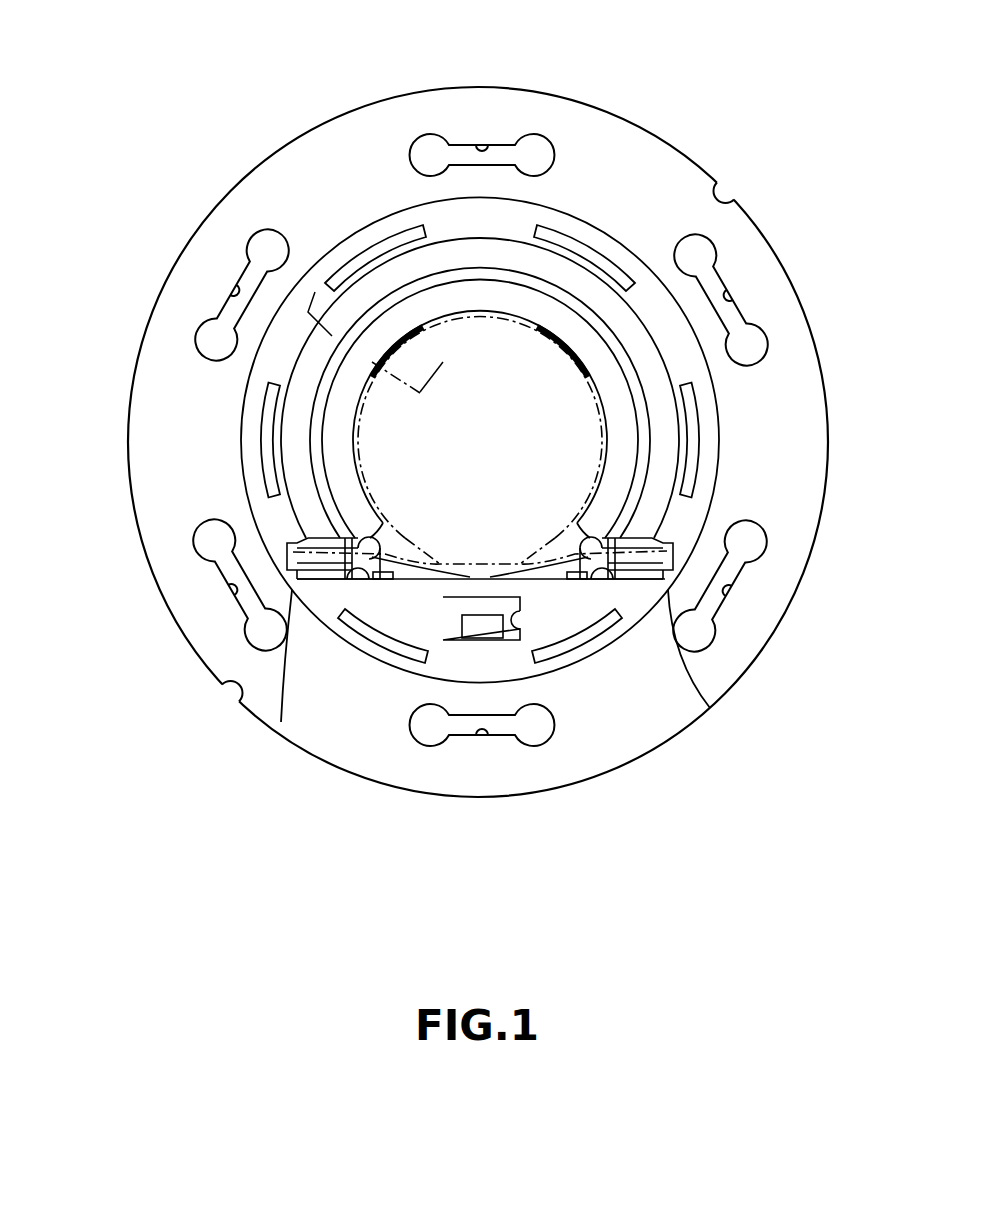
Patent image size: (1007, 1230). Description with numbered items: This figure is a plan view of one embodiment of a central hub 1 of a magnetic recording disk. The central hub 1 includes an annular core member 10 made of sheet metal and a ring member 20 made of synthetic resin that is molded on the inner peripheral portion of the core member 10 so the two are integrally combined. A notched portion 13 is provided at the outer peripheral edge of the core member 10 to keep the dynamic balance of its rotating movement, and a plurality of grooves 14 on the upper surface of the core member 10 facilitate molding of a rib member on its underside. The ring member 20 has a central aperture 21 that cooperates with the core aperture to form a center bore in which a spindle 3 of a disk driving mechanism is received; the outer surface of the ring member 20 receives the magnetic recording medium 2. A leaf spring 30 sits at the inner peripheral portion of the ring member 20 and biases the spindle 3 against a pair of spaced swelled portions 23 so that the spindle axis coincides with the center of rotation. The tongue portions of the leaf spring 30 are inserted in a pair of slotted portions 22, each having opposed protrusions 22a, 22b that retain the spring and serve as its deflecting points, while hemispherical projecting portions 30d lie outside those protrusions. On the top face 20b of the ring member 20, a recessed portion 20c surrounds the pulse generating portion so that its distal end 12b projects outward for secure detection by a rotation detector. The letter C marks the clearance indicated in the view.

The core member 10 is at (822, 336).
The notched portion 13 is at (732, 194).
The grooves 14 is at (492, 149).
The ring member 20 is at (283, 420).
The top face 20b is at (403, 610).
The recessed portion 20c is at (637, 760).
The central aperture 21 is at (353, 453).
The slotted portions 22 is at (370, 533).
The protrusion 22a is at (370, 537).
The protrusion 22b is at (347, 607).
The swelled portions 23 is at (373, 378).
The leaf spring 30 is at (443, 537).
The projecting portions 30d is at (278, 720).
The distal end 12b is at (493, 627).
The spindle 3 is at (607, 447).
The magnetic recording medium 2 is at (485, 74).
The central hub 1 is at (480, 860).
The clearance C is at (382, 331).